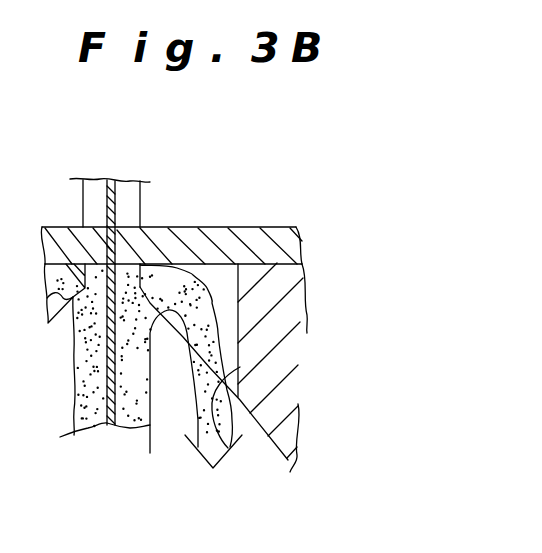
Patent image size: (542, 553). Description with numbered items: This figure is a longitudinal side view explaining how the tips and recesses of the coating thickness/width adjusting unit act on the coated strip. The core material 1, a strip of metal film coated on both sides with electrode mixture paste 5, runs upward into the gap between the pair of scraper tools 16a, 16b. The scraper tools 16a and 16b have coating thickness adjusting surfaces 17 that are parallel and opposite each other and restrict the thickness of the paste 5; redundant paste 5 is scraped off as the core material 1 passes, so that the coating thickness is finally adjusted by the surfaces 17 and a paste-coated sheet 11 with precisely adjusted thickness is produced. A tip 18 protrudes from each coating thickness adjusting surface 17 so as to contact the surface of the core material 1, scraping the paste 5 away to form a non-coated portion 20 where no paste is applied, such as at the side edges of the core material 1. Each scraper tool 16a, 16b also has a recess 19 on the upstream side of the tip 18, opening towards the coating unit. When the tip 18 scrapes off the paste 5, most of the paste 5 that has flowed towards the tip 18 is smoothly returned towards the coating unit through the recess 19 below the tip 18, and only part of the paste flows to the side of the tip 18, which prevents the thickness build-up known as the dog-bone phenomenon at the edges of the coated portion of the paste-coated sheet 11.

The core material 1 is at (107, 178).
The electrode mixture paste 5 is at (77, 433).
The paste-coated sheet 11 is at (150, 319).
The scraper tool 16a is at (275, 320).
The scraper tool 16b is at (274, 365).
The coating thickness adjusting surface 17 is at (138, 276).
The tip 18 is at (123, 248).
The recess 19 is at (225, 450).
The non-coated portion 20 is at (123, 204).